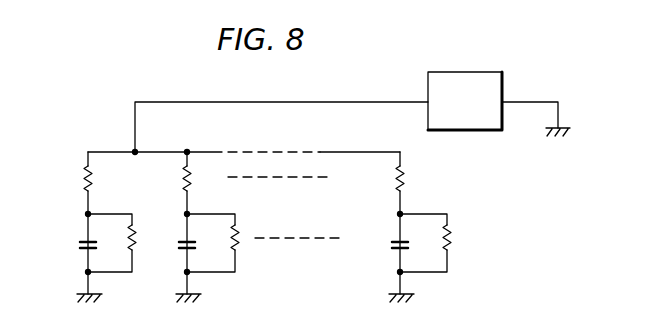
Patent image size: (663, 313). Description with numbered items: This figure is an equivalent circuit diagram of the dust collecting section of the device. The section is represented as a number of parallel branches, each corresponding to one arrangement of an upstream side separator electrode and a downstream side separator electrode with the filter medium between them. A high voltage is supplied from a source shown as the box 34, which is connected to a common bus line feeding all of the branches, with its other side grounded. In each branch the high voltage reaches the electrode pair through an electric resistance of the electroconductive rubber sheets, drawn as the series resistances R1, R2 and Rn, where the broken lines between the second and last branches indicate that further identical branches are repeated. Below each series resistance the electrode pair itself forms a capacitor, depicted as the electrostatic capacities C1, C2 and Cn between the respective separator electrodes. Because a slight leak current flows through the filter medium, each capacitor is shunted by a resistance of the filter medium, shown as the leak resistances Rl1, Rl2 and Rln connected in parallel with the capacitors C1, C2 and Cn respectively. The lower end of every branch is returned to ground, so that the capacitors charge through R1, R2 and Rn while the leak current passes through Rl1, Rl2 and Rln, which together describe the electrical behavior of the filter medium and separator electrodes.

The switching/control unit 34 is at (466, 130).
The resistance of the electroconductive rubber sheets R1 is at (101, 182).
The resistance of the electroconductive rubber sheets R2 is at (201, 182).
The resistance of the electroconductive rubber sheets Rn is at (413, 182).
The electrostatic capacity between separator electrodes C1 is at (76, 245).
The electrostatic capacity between separator electrodes C2 is at (173, 245).
The electrostatic capacity between separator electrodes Cn is at (385, 245).
The resistance of the filter medium Rl1 is at (136, 240).
The resistance of the filter medium Rl2 is at (239, 240).
The resistance of the filter medium Rln is at (451, 240).